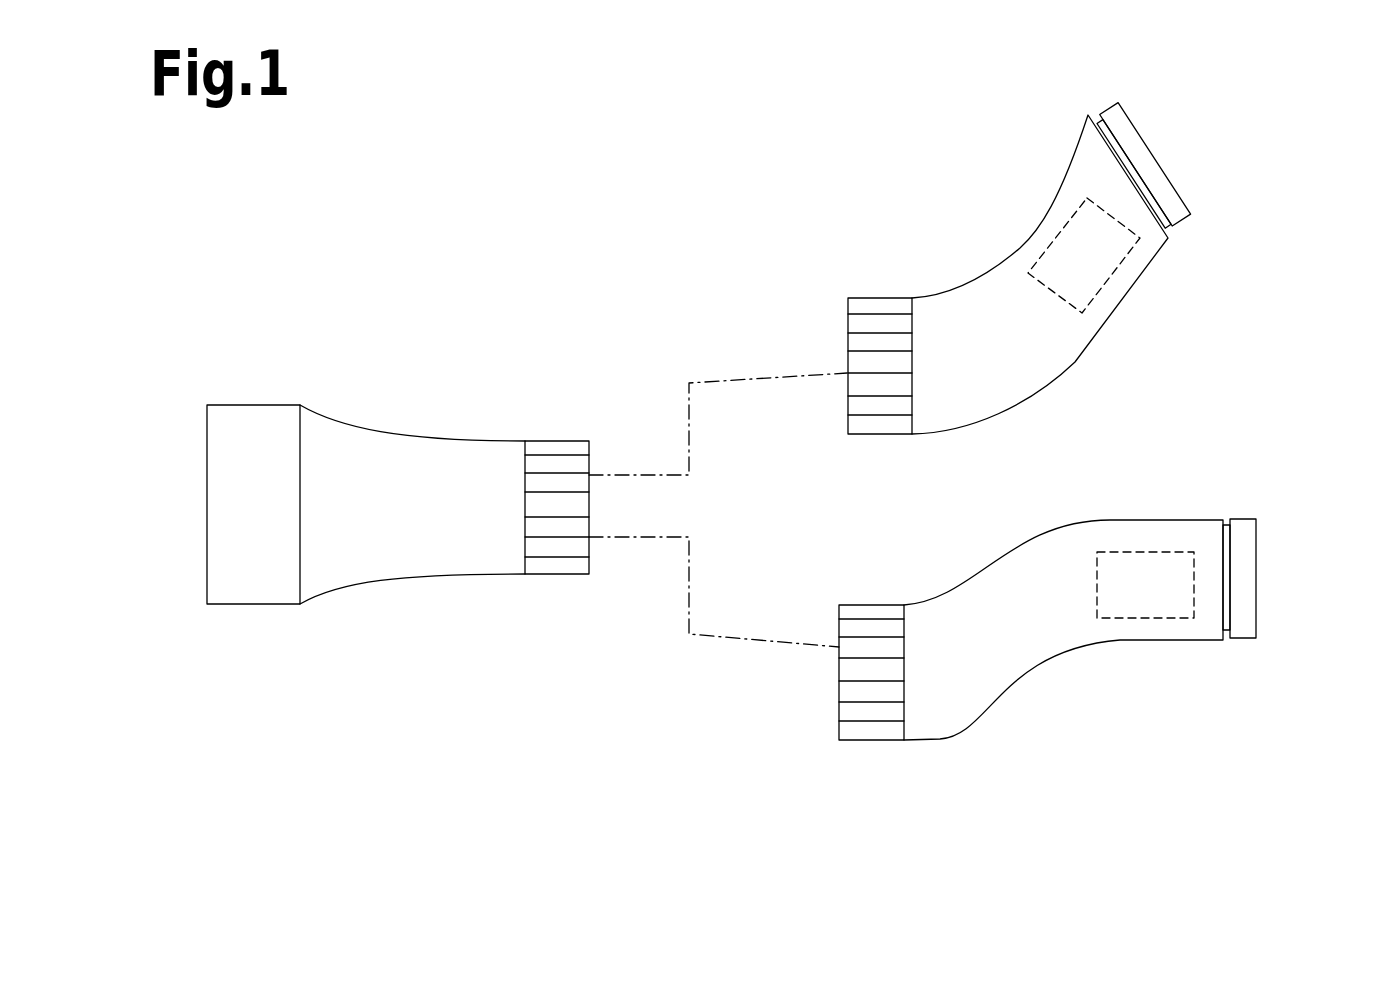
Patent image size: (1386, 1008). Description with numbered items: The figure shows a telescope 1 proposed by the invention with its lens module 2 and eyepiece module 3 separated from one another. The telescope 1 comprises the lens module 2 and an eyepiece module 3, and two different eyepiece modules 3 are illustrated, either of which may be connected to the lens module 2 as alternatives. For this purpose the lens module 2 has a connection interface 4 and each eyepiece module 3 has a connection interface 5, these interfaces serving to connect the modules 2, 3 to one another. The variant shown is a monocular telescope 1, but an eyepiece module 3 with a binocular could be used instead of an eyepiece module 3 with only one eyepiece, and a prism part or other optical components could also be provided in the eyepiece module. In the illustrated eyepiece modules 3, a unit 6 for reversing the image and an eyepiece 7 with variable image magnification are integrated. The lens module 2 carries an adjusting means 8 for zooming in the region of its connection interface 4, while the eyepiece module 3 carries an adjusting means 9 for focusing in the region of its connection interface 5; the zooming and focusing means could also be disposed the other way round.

The telescope 1 is at (528, 233).
The lens module 2 is at (408, 452).
The eyepiece module 3 is at (990, 285).
The connection interface 4 is at (602, 458).
The connection interface 5 is at (834, 329).
The unit for reversing the image 6 is at (1070, 237).
The eyepiece 7 is at (1153, 168).
The adjusting means 8 is at (555, 448).
The adjusting means 9 is at (880, 305).